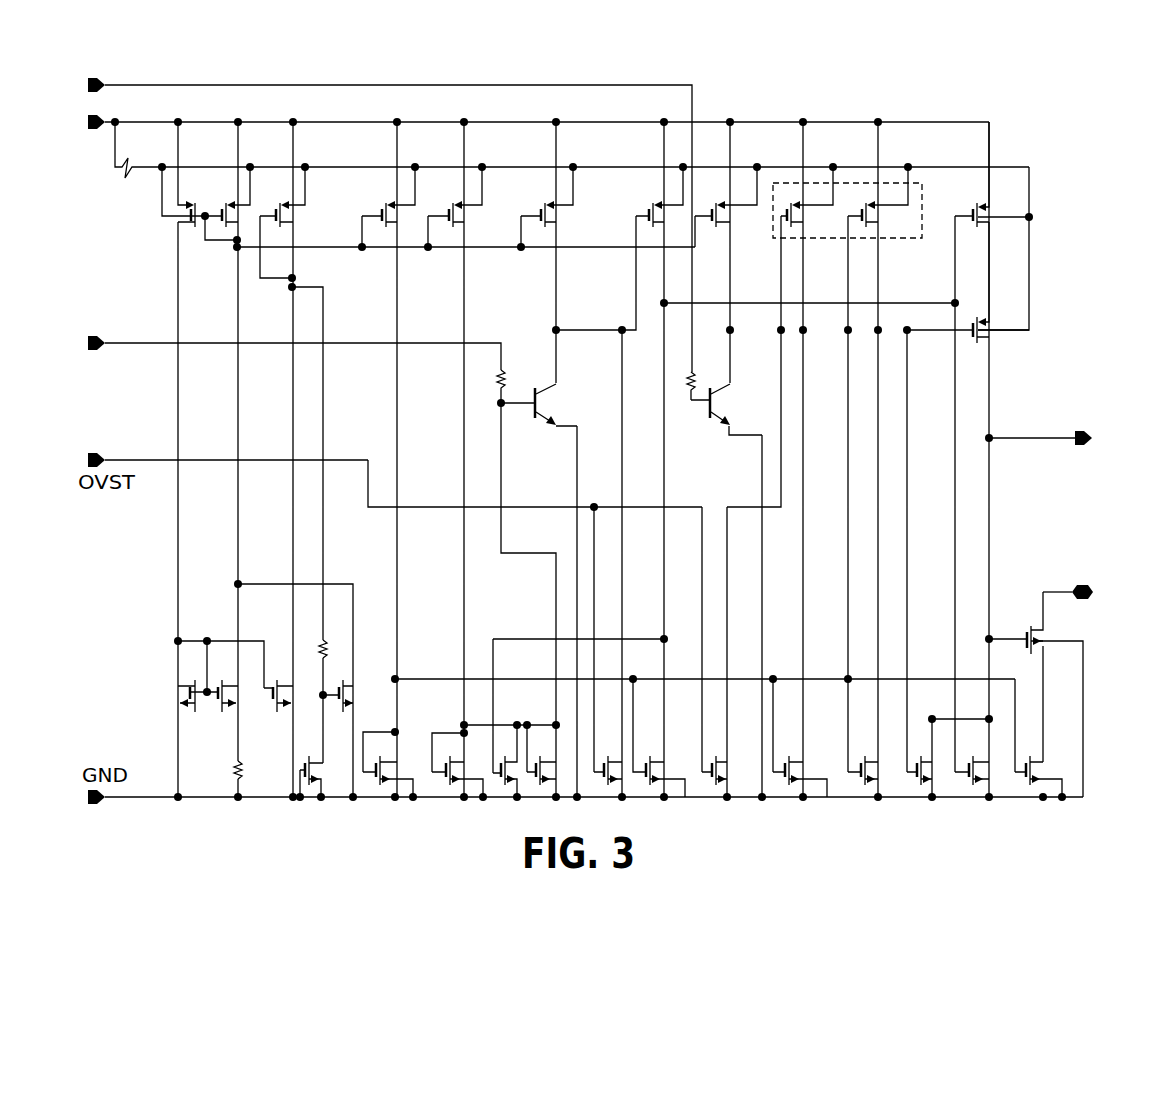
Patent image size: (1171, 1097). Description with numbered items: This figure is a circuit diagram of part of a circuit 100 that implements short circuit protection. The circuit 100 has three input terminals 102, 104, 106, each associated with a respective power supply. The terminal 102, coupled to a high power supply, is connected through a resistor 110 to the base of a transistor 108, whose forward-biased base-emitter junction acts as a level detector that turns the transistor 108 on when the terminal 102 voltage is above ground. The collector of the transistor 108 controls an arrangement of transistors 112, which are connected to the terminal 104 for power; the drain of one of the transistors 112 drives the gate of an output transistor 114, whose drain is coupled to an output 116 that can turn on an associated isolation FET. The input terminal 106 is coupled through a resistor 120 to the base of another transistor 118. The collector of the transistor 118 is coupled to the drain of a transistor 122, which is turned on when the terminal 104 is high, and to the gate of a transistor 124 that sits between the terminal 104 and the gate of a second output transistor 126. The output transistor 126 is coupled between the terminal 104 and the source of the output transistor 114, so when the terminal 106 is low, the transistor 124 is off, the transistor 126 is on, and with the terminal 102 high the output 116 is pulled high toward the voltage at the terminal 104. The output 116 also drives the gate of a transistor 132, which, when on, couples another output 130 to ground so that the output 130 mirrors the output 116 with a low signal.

The circuit 100 is at (1012, 96).
The input terminal 102 is at (90, 78).
The input terminal 104 is at (90, 116).
The input terminal 106 is at (90, 338).
The transistor 108 is at (722, 398).
The resistor 110 is at (689, 388).
The arrangement of transistors 112 is at (928, 196).
The output transistor 114 is at (1010, 347).
The output 116 is at (1040, 437).
The transistor 118 is at (558, 402).
The resistor 120 is at (505, 374).
The transistor 122 is at (574, 230).
The transistor 124 is at (648, 193).
The output transistor 126 is at (1008, 197).
The output 130 is at (1082, 583).
The transistor 132 is at (1013, 600).